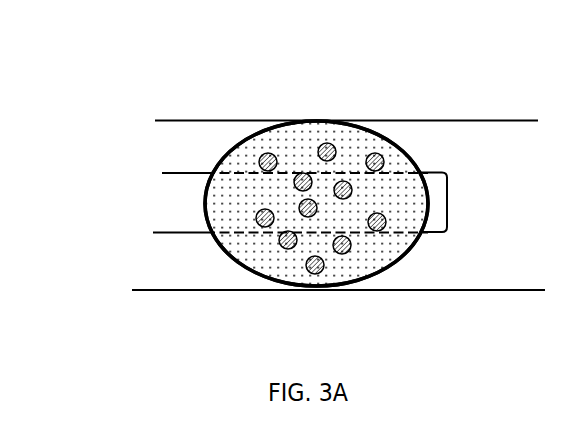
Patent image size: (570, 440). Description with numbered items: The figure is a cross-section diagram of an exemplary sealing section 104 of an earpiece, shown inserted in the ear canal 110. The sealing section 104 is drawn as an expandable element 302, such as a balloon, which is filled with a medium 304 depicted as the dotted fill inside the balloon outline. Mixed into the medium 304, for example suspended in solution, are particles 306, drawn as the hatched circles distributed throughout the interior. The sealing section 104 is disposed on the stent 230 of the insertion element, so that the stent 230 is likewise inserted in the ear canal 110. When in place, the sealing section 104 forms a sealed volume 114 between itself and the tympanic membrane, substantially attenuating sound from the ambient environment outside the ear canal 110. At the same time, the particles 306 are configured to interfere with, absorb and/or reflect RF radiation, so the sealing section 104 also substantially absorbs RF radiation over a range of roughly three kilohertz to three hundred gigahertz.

The sealing section 104 is at (223, 141).
The ear canal 110 is at (508, 104).
The sealed volume 114 is at (521, 180).
The stent 230 is at (450, 197).
The expandable element 302 is at (397, 267).
The medium 304 is at (287, 265).
The particles 306 is at (328, 143).